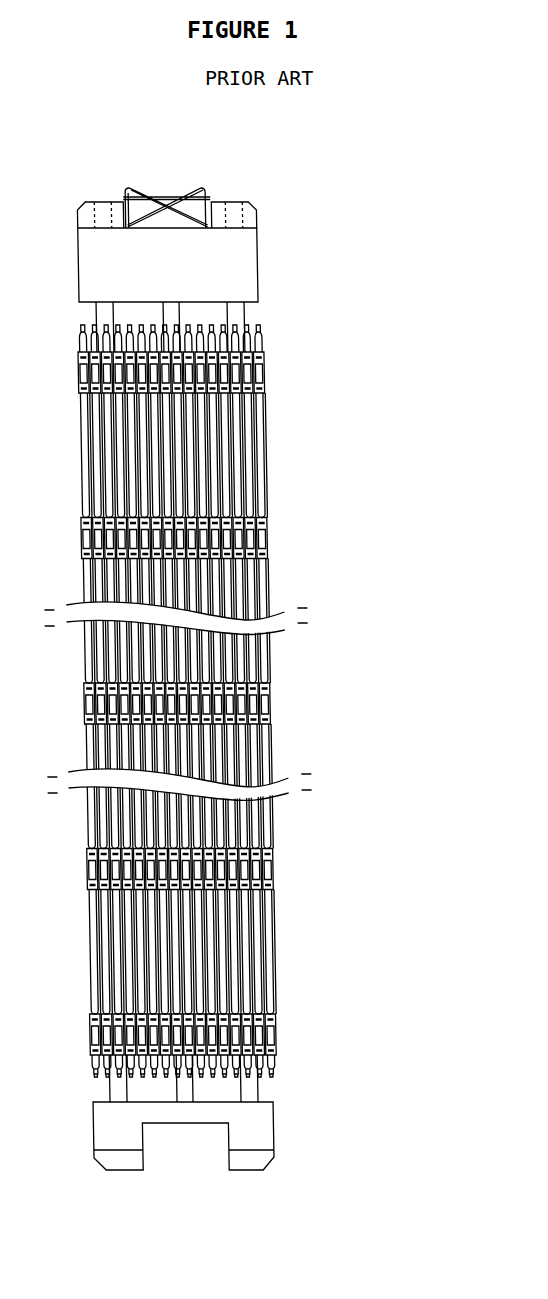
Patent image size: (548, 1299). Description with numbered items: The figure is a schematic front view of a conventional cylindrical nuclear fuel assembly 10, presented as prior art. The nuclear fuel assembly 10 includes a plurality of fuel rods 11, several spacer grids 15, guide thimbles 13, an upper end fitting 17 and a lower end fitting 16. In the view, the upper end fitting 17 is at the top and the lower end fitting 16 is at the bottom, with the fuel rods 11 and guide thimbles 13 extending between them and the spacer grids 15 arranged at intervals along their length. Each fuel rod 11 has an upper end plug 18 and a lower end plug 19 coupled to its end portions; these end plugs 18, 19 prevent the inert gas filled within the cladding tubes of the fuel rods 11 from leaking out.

The nuclear fuel assembly 10 is at (196, 644).
The fuel rod 11 is at (262, 443).
The guide thimble 13 is at (237, 310).
The spacer grid 15 is at (265, 538).
The lower end fitting 16 is at (263, 1132).
The upper end fitting 17 is at (235, 260).
The upper end plug 18 is at (258, 328).
The lower end plug 19 is at (272, 1075).